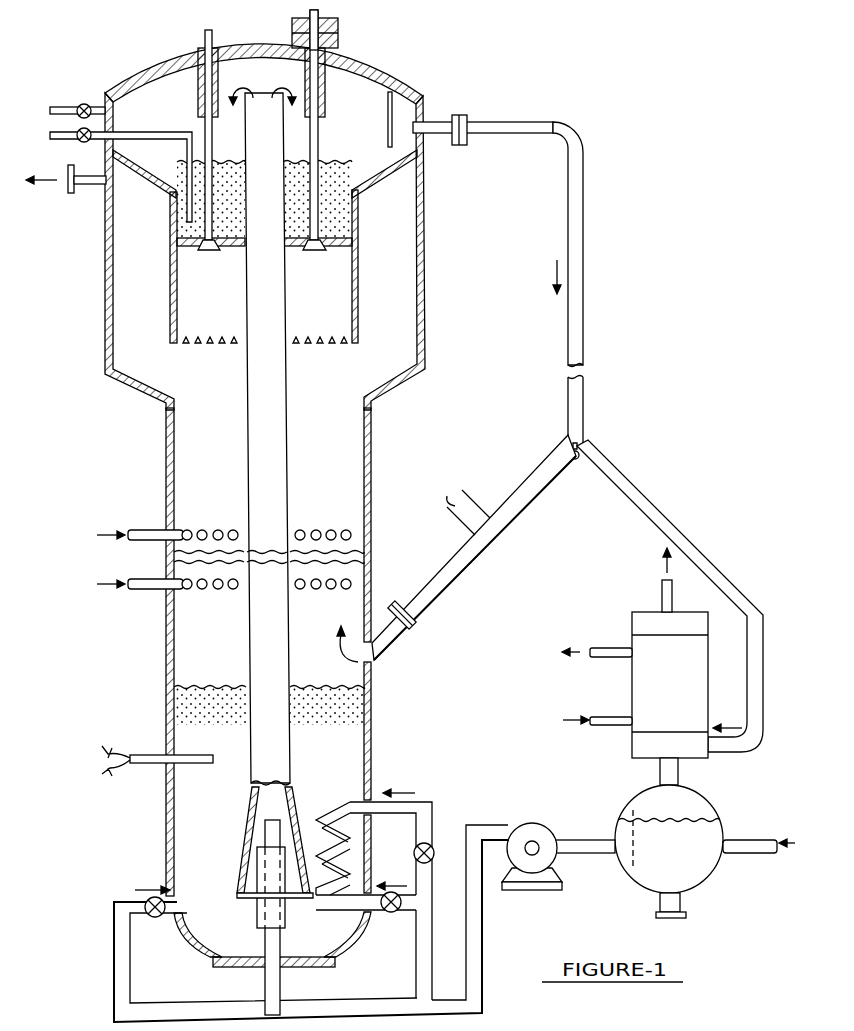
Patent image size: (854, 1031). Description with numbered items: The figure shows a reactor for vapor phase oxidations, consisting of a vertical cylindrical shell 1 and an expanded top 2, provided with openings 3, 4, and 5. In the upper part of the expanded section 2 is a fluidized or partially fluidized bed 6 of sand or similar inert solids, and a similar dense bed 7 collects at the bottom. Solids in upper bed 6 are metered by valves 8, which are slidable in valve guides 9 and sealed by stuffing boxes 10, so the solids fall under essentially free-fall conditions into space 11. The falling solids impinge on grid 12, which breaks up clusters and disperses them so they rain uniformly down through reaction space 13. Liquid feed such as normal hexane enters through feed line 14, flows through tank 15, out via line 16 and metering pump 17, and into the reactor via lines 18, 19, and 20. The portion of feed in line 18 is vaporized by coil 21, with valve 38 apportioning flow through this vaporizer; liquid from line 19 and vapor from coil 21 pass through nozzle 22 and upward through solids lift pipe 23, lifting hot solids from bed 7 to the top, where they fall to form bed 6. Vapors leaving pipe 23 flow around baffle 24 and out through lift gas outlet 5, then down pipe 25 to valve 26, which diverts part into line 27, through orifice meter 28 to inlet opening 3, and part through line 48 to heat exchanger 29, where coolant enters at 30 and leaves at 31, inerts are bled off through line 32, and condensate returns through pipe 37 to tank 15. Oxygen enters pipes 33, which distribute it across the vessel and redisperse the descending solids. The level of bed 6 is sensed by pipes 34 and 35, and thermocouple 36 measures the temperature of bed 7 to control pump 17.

The vertical cylindrical shell 1 is at (166, 455).
The expanded top 2 is at (105, 291).
The feed inlet opening 3 is at (380, 653).
The opening 4 is at (91, 189).
The lift gas outlet 5 is at (426, 119).
The upper bed 6 is at (340, 174).
The lower bed 7 is at (212, 690).
The valves 8 is at (213, 252).
The valve guides 9 is at (198, 90).
The stuffing boxes 10 is at (338, 34).
The space 11 is at (352, 308).
The grid 12 is at (207, 345).
The reaction space 13 is at (269, 546).
The feed line 14 is at (758, 838).
The tank 15 is at (669, 851).
The line 16 is at (594, 838).
The metering pump 17 is at (543, 892).
The line 18 is at (410, 884).
The line 19 is at (282, 983).
The line 20 is at (130, 950).
The coil 21 is at (313, 824).
The nozzle 22 is at (255, 914).
The solids lift pipe 23 is at (288, 296).
The baffle 24 is at (388, 133).
The pipe 25 is at (583, 250).
The valve 26 is at (584, 449).
The line 27 is at (527, 476).
The orifice meter 28 is at (490, 530).
The heat exchanger 29 is at (631, 686).
The coolant inlet 30 is at (600, 728).
The coolant outlet 31 is at (603, 647).
The line 32 is at (660, 594).
The oxygen pipes 33 is at (139, 527).
The sensing pipe 34 is at (60, 144).
The sensing pipe 35 is at (60, 107).
The thermocouple 36 is at (148, 767).
The pipe 37 is at (680, 775).
The valve 38 is at (415, 852).
The line 48 is at (690, 539).